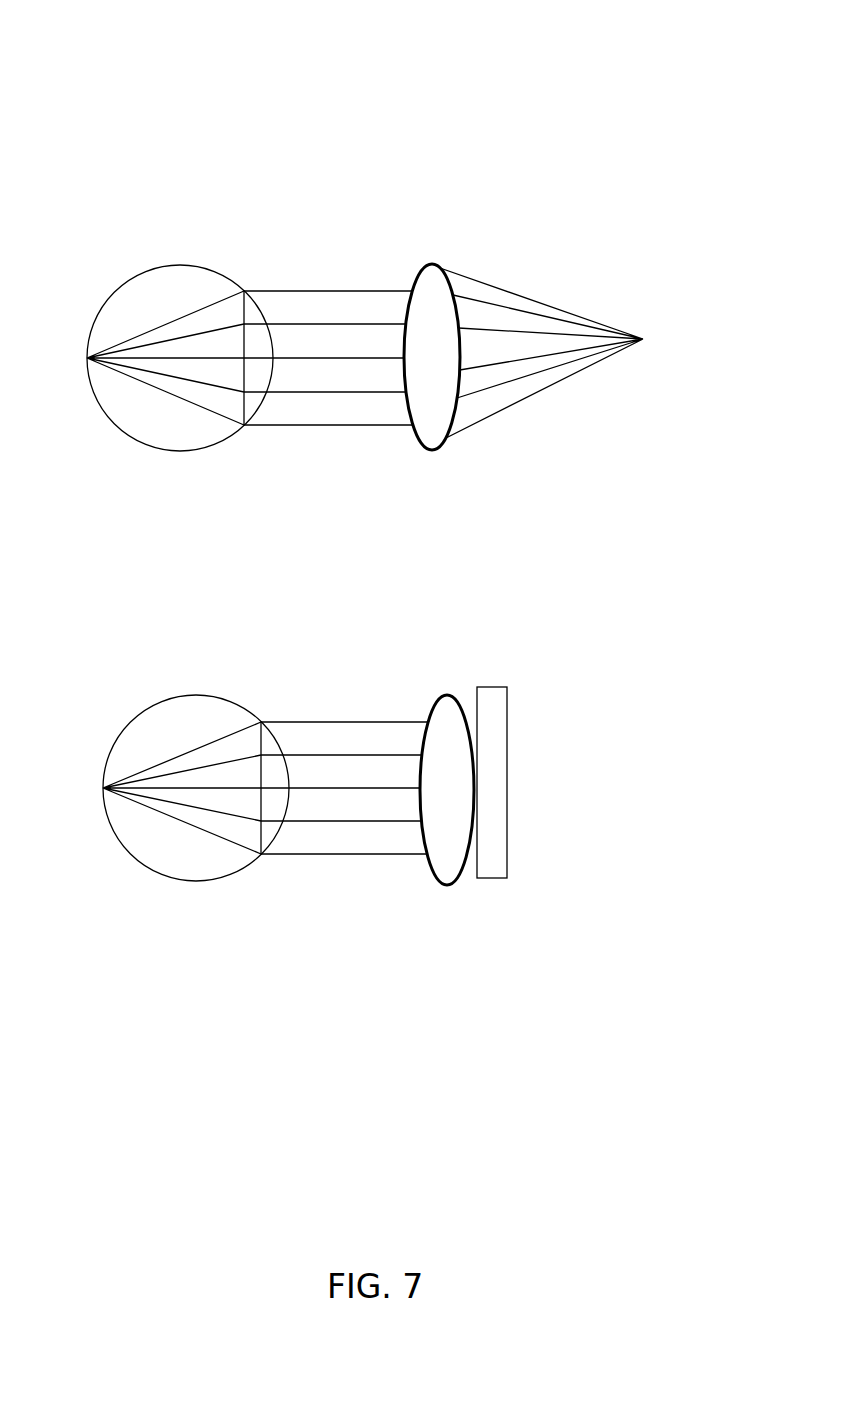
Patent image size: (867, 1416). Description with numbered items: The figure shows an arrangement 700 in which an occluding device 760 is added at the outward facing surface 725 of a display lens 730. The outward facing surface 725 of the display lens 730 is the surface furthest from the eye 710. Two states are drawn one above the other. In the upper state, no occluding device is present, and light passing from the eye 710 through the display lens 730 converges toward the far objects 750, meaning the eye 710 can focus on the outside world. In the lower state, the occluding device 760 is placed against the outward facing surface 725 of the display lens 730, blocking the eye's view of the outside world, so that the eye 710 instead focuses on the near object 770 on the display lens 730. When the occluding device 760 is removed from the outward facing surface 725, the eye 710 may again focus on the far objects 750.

The optical system 700 is at (320, 70).
The eye 710 is at (128, 279).
The outward facing surface 725 is at (445, 268).
The display lens 730 is at (428, 424).
The far objects 750 is at (643, 339).
The occluding device 760 is at (497, 760).
The near object 770 is at (426, 736).